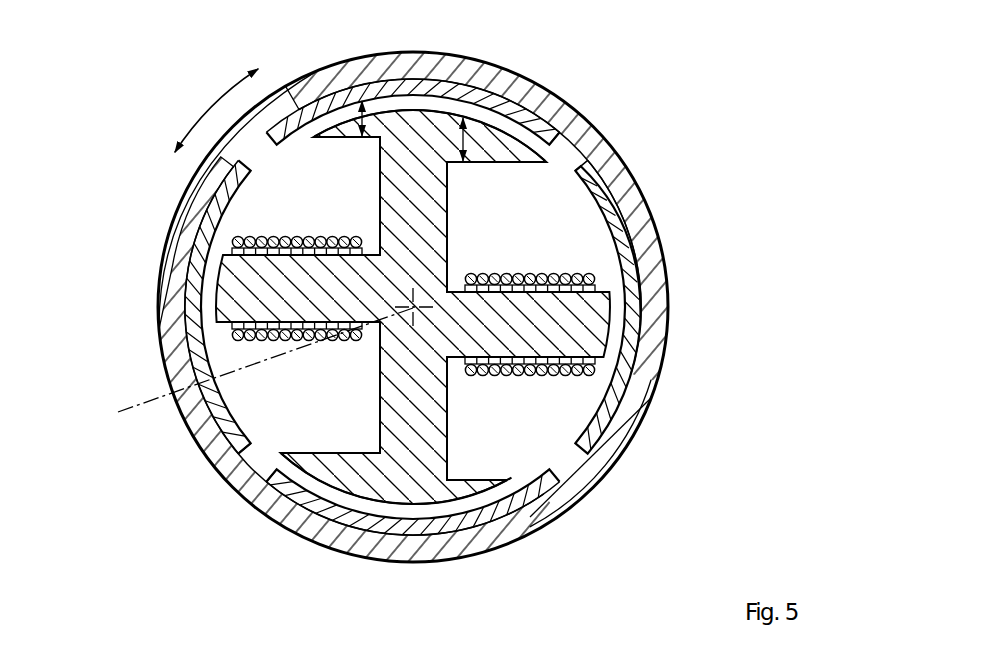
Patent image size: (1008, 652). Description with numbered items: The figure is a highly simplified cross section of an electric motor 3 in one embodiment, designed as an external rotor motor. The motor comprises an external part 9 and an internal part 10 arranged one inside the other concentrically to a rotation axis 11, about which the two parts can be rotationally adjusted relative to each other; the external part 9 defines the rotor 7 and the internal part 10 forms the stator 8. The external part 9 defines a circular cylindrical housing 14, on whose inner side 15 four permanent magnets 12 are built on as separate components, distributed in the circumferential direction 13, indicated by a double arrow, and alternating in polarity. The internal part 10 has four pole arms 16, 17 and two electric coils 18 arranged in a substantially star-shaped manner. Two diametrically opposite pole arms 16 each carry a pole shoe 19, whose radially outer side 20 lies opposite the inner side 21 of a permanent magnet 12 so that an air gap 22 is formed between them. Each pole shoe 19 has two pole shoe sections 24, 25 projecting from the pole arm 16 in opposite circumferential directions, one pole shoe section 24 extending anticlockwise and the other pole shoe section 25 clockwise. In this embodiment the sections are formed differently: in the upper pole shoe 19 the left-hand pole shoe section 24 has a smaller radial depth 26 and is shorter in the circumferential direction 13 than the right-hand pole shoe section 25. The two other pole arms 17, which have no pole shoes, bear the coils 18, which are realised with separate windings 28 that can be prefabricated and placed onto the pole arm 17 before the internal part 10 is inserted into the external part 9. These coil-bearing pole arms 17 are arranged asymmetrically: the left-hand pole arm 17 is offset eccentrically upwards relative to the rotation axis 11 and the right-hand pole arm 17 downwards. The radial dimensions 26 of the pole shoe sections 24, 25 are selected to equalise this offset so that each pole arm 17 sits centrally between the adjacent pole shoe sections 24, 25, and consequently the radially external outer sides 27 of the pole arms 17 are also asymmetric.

The electric motor 3 is at (781, 127).
The rotor 7 is at (628, 436).
The stator 8 is at (432, 392).
The external part 9 is at (655, 406).
The internal part 10 is at (451, 230).
The rotation axis 11 is at (250, 367).
The permanent magnet 12 is at (411, 310).
The circumferential direction 13 is at (201, 102).
The housing 14 is at (633, 196).
The inner side 15 is at (590, 170).
The pole arm 16 is at (386, 213).
The pole arm 17 is at (195, 258).
The electric coil 18 is at (229, 238).
The pole shoe 19 is at (310, 93).
The outer side 20 is at (512, 92).
The inner side 21 is at (560, 145).
The air gap 22 is at (388, 100).
The pole shoe section 24 is at (357, 140).
The pole shoe section 25 is at (515, 164).
The radial depth 26 is at (340, 118).
The outer side 27 is at (185, 302).
The winding 28 is at (262, 342).